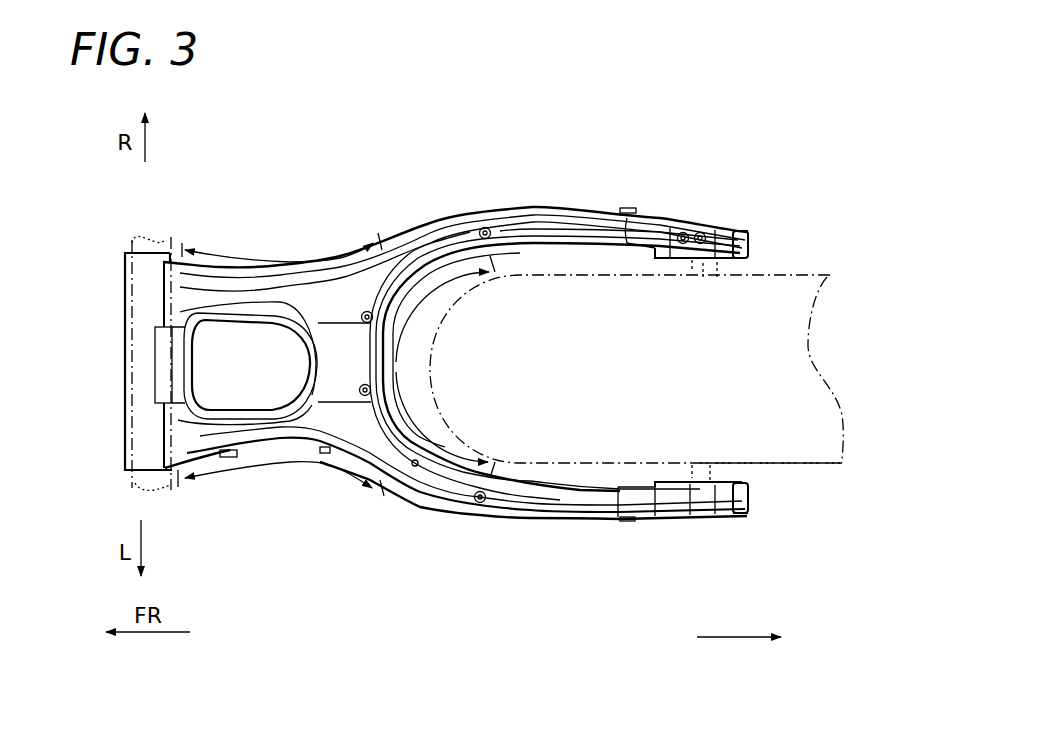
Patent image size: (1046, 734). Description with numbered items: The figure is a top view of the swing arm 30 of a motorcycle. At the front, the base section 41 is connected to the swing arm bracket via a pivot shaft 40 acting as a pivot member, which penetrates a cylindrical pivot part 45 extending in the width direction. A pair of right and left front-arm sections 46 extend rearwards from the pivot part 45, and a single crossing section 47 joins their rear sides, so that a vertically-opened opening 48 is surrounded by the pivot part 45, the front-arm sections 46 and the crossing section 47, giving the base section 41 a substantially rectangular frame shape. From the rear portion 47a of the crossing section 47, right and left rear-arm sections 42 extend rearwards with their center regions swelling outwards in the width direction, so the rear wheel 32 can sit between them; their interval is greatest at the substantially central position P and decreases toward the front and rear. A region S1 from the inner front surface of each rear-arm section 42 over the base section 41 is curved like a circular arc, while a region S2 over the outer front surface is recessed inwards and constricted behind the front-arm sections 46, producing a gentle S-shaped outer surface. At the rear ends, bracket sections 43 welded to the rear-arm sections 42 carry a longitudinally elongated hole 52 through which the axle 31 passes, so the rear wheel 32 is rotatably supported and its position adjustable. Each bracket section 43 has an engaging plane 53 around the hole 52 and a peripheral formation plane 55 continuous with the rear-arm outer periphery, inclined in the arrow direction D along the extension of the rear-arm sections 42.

The swing arm 30 is at (578, 125).
The axle 31 is at (720, 469).
The rear wheel 32 is at (778, 277).
The pivot shaft 40 is at (128, 233).
The base section 41 is at (198, 246).
The rear-arm sections 42 is at (477, 211).
The bracket sections 43 is at (733, 218).
The pivot part 45 is at (124, 355).
The front-arm sections 46 is at (232, 290).
The crossing section 47 is at (337, 378).
The rear portion of the crossing section 47a is at (403, 366).
The opening 48 is at (270, 329).
The hole 52 is at (747, 246).
The engaging plane 53 is at (739, 219).
The peripheral formation plane 55 is at (650, 216).
The region S1 is at (433, 297).
The region S2 is at (307, 266).
The center position P is at (533, 205).
The arrow direction D is at (672, 199).